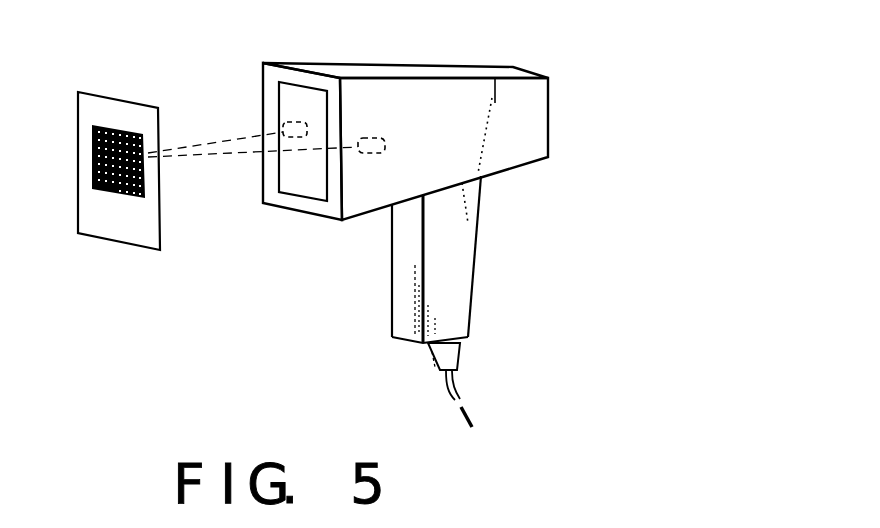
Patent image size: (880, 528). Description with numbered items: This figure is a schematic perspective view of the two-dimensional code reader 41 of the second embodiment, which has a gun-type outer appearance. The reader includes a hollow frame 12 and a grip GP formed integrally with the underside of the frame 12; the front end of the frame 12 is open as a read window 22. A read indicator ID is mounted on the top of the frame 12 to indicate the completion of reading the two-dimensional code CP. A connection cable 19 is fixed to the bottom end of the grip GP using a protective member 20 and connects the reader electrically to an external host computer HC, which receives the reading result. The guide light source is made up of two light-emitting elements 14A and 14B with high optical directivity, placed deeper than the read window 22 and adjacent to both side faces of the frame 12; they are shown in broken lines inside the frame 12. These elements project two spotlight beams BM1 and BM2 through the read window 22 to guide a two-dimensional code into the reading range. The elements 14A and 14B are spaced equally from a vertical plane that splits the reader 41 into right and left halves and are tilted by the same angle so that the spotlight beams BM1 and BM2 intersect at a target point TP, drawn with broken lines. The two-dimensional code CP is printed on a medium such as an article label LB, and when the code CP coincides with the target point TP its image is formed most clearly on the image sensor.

The two-dimensional code reader 41 is at (418, 203).
The frame 12 is at (545, 113).
The read indicator ID is at (383, 72).
The read window 22 is at (302, 88).
The light-emitting element 14A is at (283, 125).
The light-emitting element 14B is at (386, 147).
The spotlight beam BM1 is at (192, 148).
The spotlight beam BM2 is at (222, 158).
The two-dimensional code CP is at (92, 148).
The target point TP is at (125, 195).
The article label LB is at (113, 232).
The grip GP is at (470, 255).
The protective member 20 is at (452, 357).
The connection cable 19 is at (448, 387).
The host computer HC is at (490, 421).